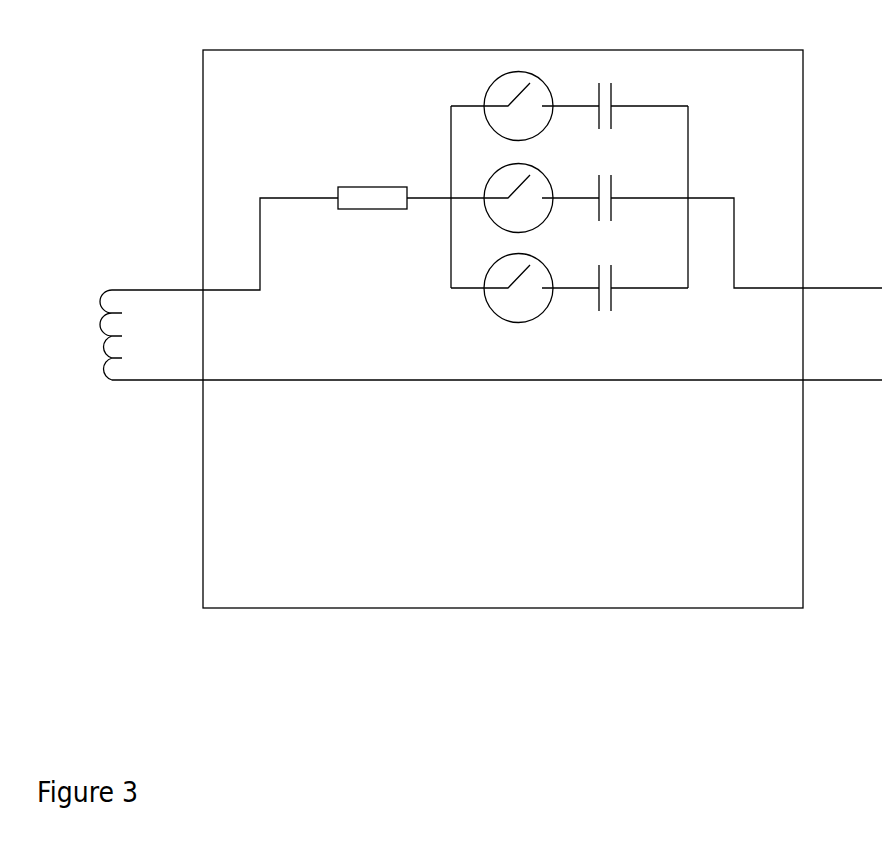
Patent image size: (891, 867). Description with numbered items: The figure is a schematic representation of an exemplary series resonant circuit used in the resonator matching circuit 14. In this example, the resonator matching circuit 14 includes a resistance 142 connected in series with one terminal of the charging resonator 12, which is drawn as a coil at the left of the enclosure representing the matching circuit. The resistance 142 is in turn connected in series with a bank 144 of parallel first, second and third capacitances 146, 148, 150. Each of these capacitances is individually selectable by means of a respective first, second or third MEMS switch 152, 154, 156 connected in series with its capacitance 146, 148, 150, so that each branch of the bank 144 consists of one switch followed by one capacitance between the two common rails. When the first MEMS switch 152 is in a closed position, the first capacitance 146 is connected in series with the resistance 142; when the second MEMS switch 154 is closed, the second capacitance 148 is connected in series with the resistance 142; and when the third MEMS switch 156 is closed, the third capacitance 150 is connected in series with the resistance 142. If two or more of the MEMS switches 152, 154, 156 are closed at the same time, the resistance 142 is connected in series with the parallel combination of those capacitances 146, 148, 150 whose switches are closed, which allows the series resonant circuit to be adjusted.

The charging resonator 12 is at (113, 288).
The resonator matching circuit 14 is at (236, 60).
The resistance 142 is at (348, 185).
The bank of parallel capacitances 144 is at (438, 278).
The first capacitance 146 is at (611, 115).
The second capacitance 148 is at (611, 207).
The third capacitance 150 is at (611, 298).
The first MEMS switch 152 is at (530, 128).
The second MEMS switch 154 is at (530, 220).
The third MEMS switch 156 is at (530, 310).